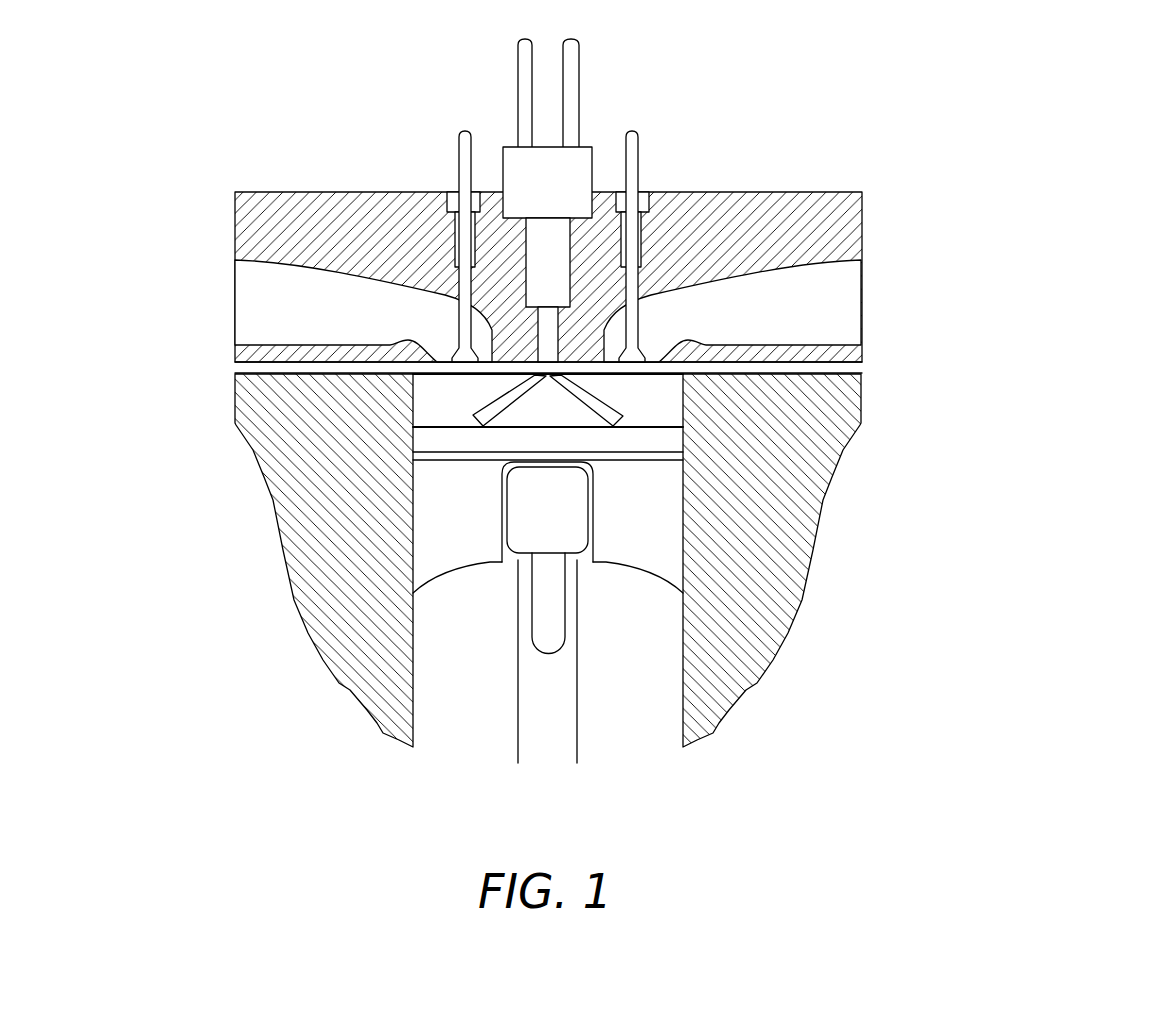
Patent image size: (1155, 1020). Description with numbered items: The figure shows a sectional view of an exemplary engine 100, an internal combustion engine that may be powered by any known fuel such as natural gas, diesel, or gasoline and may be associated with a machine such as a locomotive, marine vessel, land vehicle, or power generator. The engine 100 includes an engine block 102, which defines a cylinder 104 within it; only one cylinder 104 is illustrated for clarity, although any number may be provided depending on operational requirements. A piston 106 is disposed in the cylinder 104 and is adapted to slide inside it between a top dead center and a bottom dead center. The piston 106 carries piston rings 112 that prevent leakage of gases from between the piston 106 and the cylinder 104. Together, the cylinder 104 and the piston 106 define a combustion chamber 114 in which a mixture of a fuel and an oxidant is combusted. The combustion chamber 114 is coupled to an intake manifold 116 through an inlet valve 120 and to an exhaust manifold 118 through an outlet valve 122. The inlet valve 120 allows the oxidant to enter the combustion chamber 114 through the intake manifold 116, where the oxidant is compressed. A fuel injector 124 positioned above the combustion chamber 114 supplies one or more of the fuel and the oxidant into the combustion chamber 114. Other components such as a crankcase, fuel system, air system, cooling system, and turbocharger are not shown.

The engine 100 is at (619, 412).
The engine block 102 is at (830, 500).
The cylinder 104 is at (448, 712).
The piston 106 is at (421, 522).
The piston rings 112 is at (427, 458).
The combustion chamber 114 is at (432, 405).
The intake manifold 116 is at (258, 307).
The exhaust manifold 118 is at (837, 307).
The inlet valve 120 is at (460, 165).
The outlet valve 122 is at (637, 165).
The fuel injector 124 is at (548, 265).